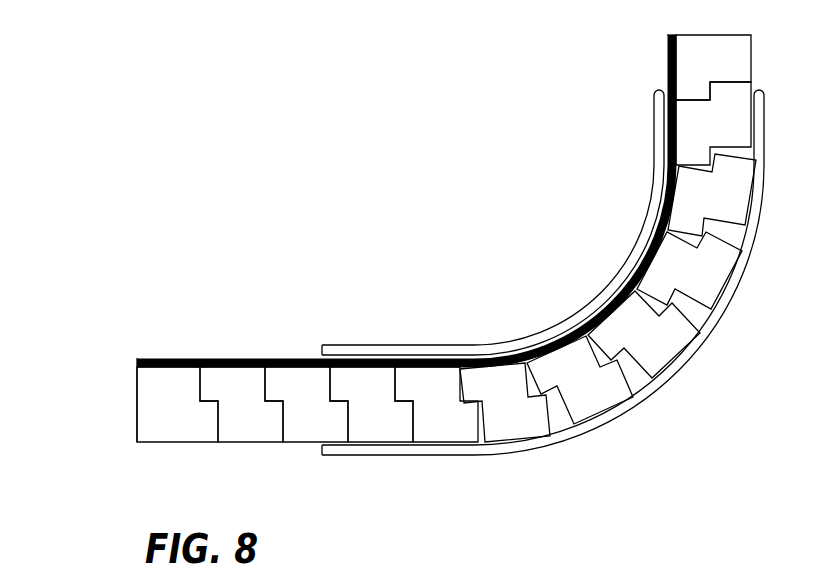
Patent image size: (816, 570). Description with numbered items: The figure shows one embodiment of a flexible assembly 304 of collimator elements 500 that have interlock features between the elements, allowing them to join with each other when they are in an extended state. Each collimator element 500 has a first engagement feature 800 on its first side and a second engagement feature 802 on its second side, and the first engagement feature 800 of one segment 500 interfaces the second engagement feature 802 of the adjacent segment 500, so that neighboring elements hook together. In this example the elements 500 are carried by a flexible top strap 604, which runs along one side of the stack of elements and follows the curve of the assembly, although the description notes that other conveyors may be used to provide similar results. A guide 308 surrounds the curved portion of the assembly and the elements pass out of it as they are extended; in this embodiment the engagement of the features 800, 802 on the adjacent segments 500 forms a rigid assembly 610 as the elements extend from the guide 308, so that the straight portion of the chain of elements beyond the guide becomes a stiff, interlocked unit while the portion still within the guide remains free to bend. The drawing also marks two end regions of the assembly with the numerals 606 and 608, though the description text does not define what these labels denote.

The flexible assembly 304 is at (210, 277).
The guide 308 is at (478, 345).
The collimator element 500 is at (673, 352).
The flexible top strap 604 is at (303, 358).
The proximal end 606 is at (100, 397).
The distal end 608 is at (625, 52).
The rigid assembly 610 is at (133, 468).
The first engagement feature 800 is at (633, 373).
The second engagement feature 802 is at (699, 313).